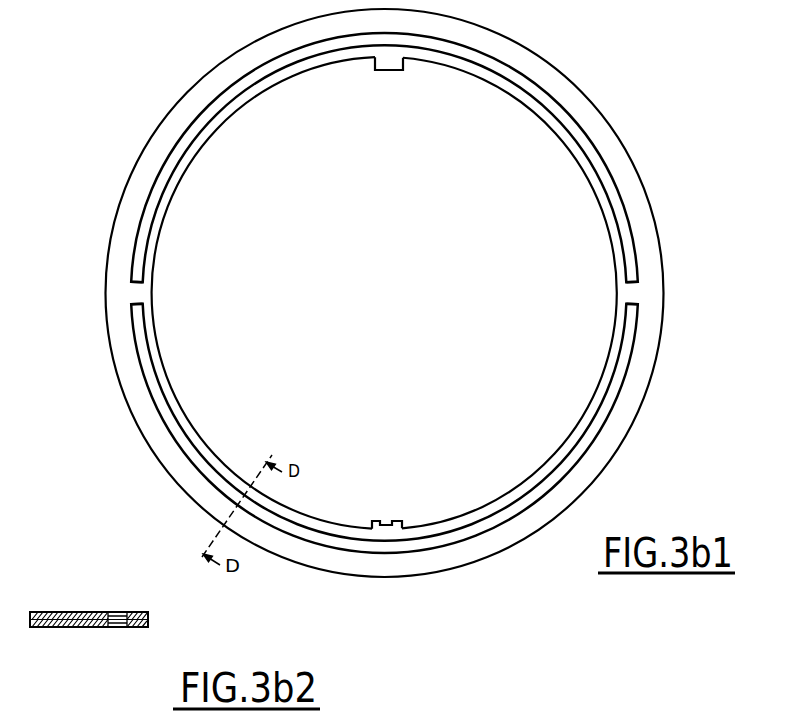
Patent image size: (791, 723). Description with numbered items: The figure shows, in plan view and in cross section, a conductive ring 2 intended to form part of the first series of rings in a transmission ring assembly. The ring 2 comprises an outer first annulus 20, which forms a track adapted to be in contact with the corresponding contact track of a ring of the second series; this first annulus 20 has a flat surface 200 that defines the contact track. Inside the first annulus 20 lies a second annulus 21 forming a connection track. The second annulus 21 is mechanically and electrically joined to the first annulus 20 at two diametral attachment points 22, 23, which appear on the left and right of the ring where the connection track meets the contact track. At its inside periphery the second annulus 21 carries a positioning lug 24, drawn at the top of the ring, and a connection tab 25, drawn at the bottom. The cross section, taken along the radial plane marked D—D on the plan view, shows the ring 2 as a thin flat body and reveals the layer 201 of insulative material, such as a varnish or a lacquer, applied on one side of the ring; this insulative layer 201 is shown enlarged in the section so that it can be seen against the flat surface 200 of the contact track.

In FIG. 3b1, the conductive ring 2 is at (371, 293).
In FIG. 3b1, the first annulus 20 is at (190, 485).
In FIG. 3b1, the second annulus 21 is at (192, 420).
In FIG. 3b1, the attachment point 22 is at (138, 291).
In FIG. 3b1, the attachment point 23 is at (632, 292).
In FIG. 3b1, the positioning lug 24 is at (396, 66).
In FIG. 3b1, the connection tab 25 is at (403, 522).
In FIG. 3b1, the flat surface 200 is at (132, 394).
In FIG. 3b2, the flat surface 200 is at (97, 611).
In FIG. 3b2, the layer of insulative material 201 is at (80, 627).